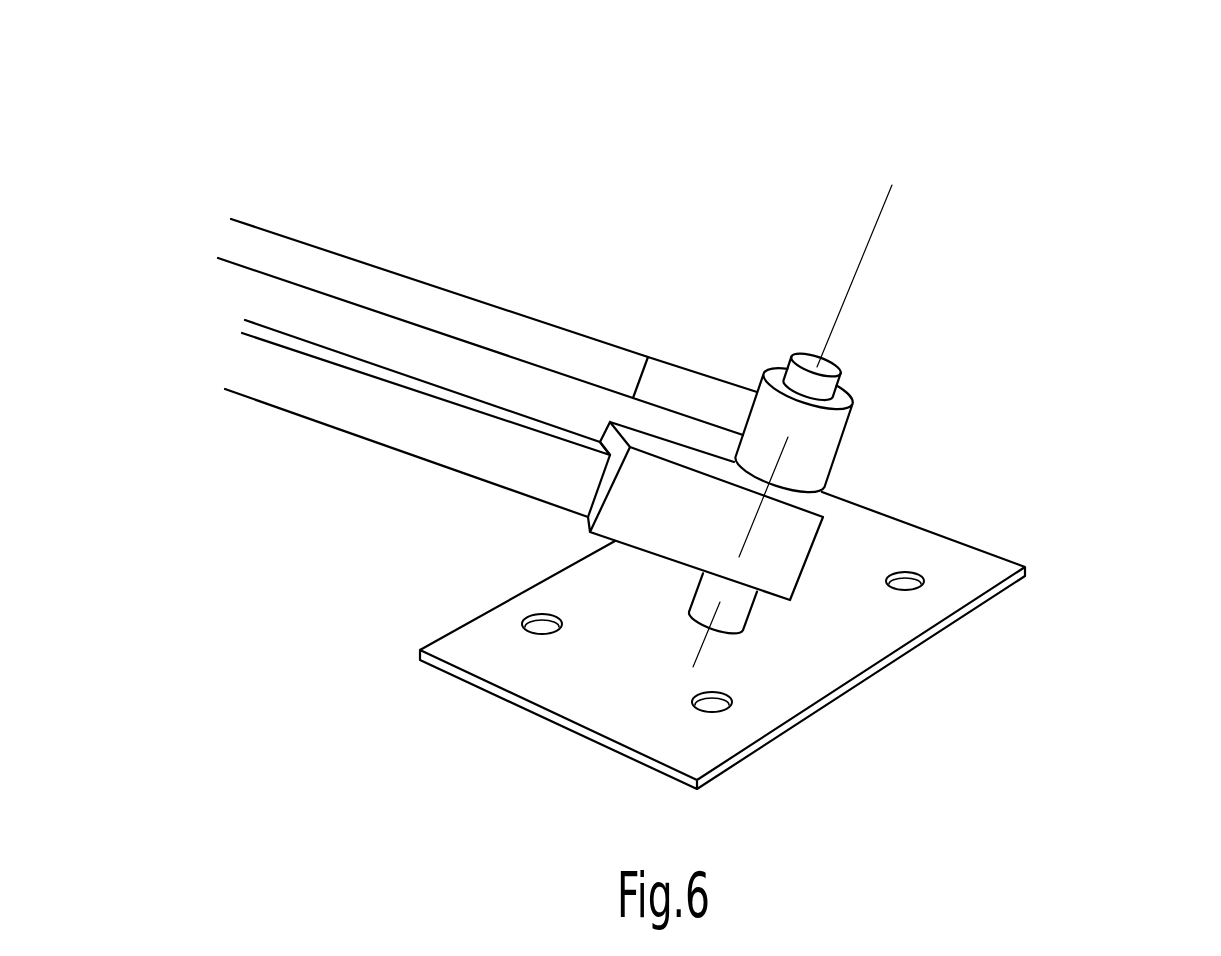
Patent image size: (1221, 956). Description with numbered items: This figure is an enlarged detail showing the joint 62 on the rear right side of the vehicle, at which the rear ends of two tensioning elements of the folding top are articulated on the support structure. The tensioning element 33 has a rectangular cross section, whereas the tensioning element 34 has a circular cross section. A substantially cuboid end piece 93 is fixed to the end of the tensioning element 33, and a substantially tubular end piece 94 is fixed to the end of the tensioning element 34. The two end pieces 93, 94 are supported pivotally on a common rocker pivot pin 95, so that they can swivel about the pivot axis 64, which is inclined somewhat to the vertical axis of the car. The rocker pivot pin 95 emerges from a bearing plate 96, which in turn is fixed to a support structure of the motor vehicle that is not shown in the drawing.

The tensioning element 33 is at (380, 403).
The tensioning element 34 is at (408, 297).
The joint 62 is at (962, 488).
The pivot axis 64 is at (860, 253).
The cuboid end piece 93 is at (627, 520).
The tubular end piece 94 is at (820, 431).
The rocker pivot pin 95 is at (843, 380).
The bearing plate 96 is at (802, 645).